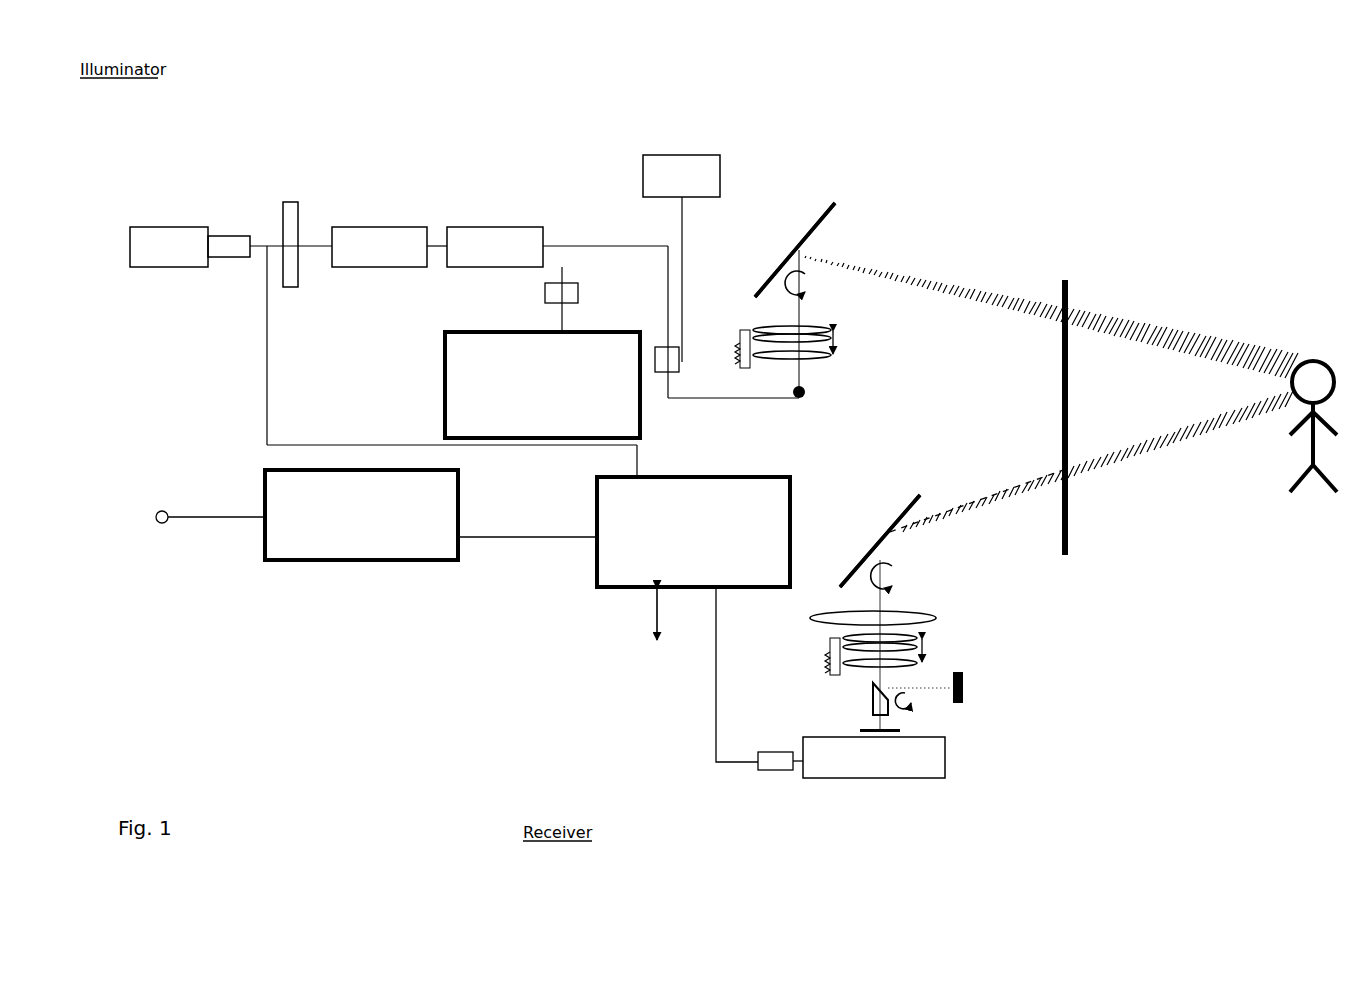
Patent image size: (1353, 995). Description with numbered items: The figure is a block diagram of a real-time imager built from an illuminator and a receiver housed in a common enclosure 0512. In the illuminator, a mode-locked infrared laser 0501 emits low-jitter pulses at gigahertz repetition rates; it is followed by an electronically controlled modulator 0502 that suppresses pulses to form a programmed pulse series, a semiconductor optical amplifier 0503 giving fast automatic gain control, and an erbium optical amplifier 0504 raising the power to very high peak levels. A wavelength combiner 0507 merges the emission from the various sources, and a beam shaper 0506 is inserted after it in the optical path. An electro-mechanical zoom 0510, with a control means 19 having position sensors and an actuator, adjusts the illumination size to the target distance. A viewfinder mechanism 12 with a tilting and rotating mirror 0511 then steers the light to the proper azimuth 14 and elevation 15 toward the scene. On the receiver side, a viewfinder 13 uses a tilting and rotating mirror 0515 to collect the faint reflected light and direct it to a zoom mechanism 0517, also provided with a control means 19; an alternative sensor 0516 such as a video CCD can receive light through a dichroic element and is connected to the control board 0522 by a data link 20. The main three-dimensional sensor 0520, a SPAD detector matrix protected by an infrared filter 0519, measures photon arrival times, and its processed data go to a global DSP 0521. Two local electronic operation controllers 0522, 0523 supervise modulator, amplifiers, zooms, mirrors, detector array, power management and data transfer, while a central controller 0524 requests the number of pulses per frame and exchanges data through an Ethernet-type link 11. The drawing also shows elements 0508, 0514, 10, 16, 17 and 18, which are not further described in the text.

The mode-locked infrared laser 0501 is at (184, 226).
The modulator 0502 is at (299, 200).
The semiconductor optical amplifier 0503 is at (390, 226).
The erbium optical amplifier 0504 is at (506, 226).
The beam shaper 0506 is at (804, 402).
The wavelength combiner 0507 is at (661, 345).
The power supply 0508 is at (697, 153).
The electro-mechanical zoom 0510 is at (838, 340).
The tilting and rotating mirror 0511 is at (790, 245).
The enclosure 0512 is at (1069, 290).
The target 0514 is at (1316, 340).
The tilting and rotating mirror 0515 is at (877, 537).
The alternative sensor 0516 is at (968, 686).
The zoom mechanism 0517 is at (935, 647).
The infrared filter 0519 is at (905, 731).
The 3D sensor 0520 is at (947, 771).
The global DSP 0521 is at (757, 766).
The local electronic controller 0522 is at (597, 566).
The local electronic operation controller 0523 is at (265, 541).
The central controller 0524 is at (445, 344).
The sensor 10 is at (545, 295).
The Ethernet-type link 11 is at (165, 510).
The viewfinder mechanism 12 is at (934, 146).
The viewfinder 13 is at (838, 195).
The azimuth 14 is at (806, 294).
The elevation 15 is at (913, 476).
The receiver mirror rotation direction 16 is at (893, 583).
The return beam 17 is at (991, 546).
The lens actuator 18 is at (736, 373).
The control means 19 is at (818, 698).
The data link 20 is at (650, 644).